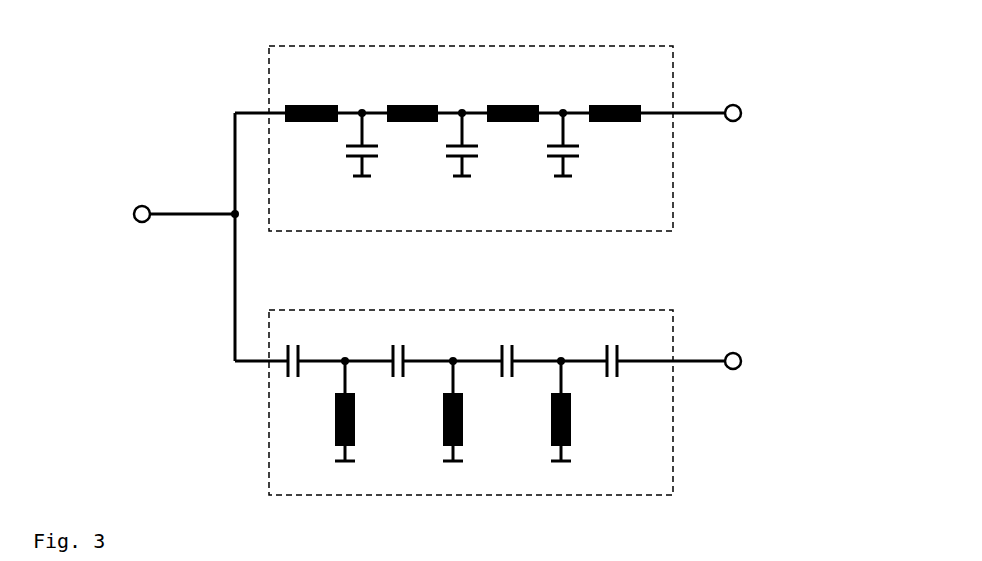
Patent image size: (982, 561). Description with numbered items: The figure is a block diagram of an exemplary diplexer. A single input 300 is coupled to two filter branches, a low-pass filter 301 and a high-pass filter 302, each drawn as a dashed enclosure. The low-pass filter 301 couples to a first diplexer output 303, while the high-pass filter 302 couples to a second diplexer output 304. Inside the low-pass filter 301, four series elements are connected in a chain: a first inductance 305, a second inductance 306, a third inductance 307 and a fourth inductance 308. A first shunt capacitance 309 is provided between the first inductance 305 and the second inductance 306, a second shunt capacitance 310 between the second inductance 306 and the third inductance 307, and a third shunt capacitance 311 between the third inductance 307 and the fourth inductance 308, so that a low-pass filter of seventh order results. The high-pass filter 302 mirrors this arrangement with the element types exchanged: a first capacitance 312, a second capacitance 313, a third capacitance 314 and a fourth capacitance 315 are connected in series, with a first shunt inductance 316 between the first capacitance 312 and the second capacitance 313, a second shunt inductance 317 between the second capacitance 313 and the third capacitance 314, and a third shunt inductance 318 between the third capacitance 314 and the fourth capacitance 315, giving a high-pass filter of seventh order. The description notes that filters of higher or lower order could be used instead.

The input 300 is at (142, 206).
The low-pass filter 301 is at (642, 218).
The high-pass filter 302 is at (642, 483).
The first diplexer output 303 is at (742, 124).
The second diplexer output 304 is at (742, 372).
The first inductance 305 is at (305, 104).
The second inductance 306 is at (408, 104).
The third inductance 307 is at (512, 104).
The fourth inductance 308 is at (606, 104).
The first shunt capacitance 309 is at (341, 156).
The second shunt capacitance 310 is at (441, 156).
The third shunt capacitance 311 is at (543, 156).
The first capacitance 312 is at (296, 341).
The second capacitance 313 is at (402, 341).
The third capacitance 314 is at (511, 341).
The fourth capacitance 315 is at (616, 341).
The first shunt inductance 316 is at (331, 424).
The second shunt inductance 317 is at (440, 424).
The third shunt inductance 318 is at (547, 424).